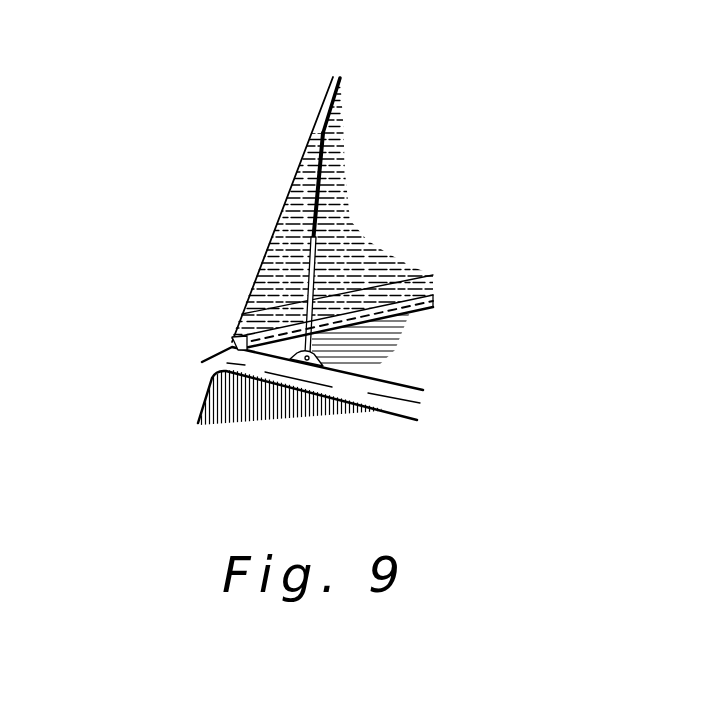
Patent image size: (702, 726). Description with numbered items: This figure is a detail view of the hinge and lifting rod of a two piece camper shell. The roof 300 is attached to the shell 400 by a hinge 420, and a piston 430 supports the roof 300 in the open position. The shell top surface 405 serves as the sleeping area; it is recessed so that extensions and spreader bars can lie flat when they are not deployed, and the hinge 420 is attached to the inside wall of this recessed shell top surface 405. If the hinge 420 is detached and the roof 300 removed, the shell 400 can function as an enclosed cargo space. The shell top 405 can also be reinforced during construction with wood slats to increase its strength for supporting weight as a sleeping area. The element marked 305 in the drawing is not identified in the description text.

The roof 300 is at (317, 135).
The sail panel 305 is at (350, 233).
The shell 400 is at (212, 365).
The shell top surface 405 is at (387, 350).
The hinge 420 is at (240, 338).
The piston 430 is at (290, 281).